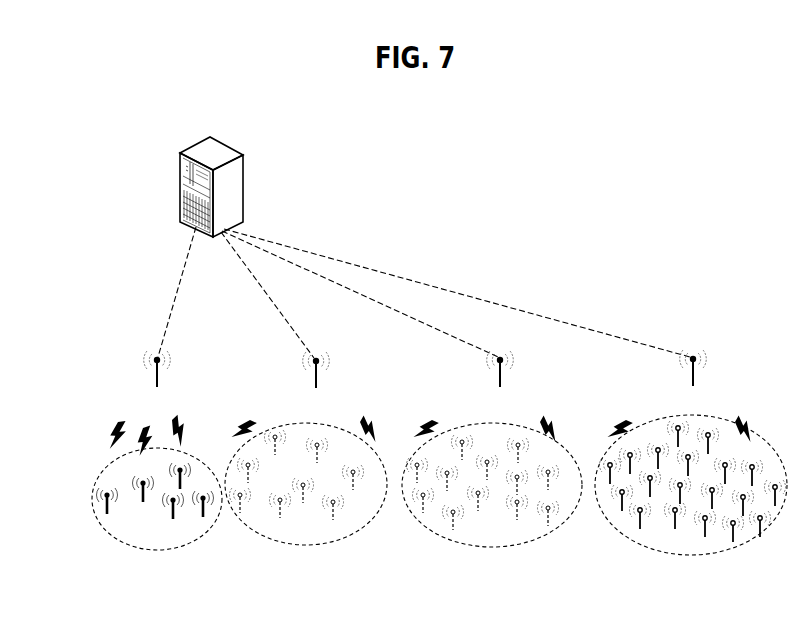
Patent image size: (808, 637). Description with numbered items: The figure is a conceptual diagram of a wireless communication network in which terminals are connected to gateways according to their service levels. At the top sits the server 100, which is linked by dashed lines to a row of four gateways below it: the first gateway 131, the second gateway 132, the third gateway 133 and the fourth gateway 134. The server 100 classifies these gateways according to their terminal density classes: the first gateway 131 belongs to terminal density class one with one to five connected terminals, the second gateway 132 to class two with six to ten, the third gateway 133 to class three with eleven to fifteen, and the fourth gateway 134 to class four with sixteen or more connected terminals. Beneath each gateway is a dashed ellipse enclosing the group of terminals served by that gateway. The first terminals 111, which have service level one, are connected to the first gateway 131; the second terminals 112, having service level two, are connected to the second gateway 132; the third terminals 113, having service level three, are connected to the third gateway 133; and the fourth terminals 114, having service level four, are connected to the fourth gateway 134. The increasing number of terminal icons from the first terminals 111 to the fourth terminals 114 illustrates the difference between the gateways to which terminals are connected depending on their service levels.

The server 100 is at (233, 137).
The first gateway 131 is at (156, 356).
The second gateway 132 is at (316, 357).
The third gateway 133 is at (500, 356).
The fourth gateway 134 is at (693, 355).
The first terminals 111 is at (157, 551).
The second terminals 112 is at (306, 546).
The third terminals 113 is at (492, 548).
The fourth terminals 114 is at (690, 556).